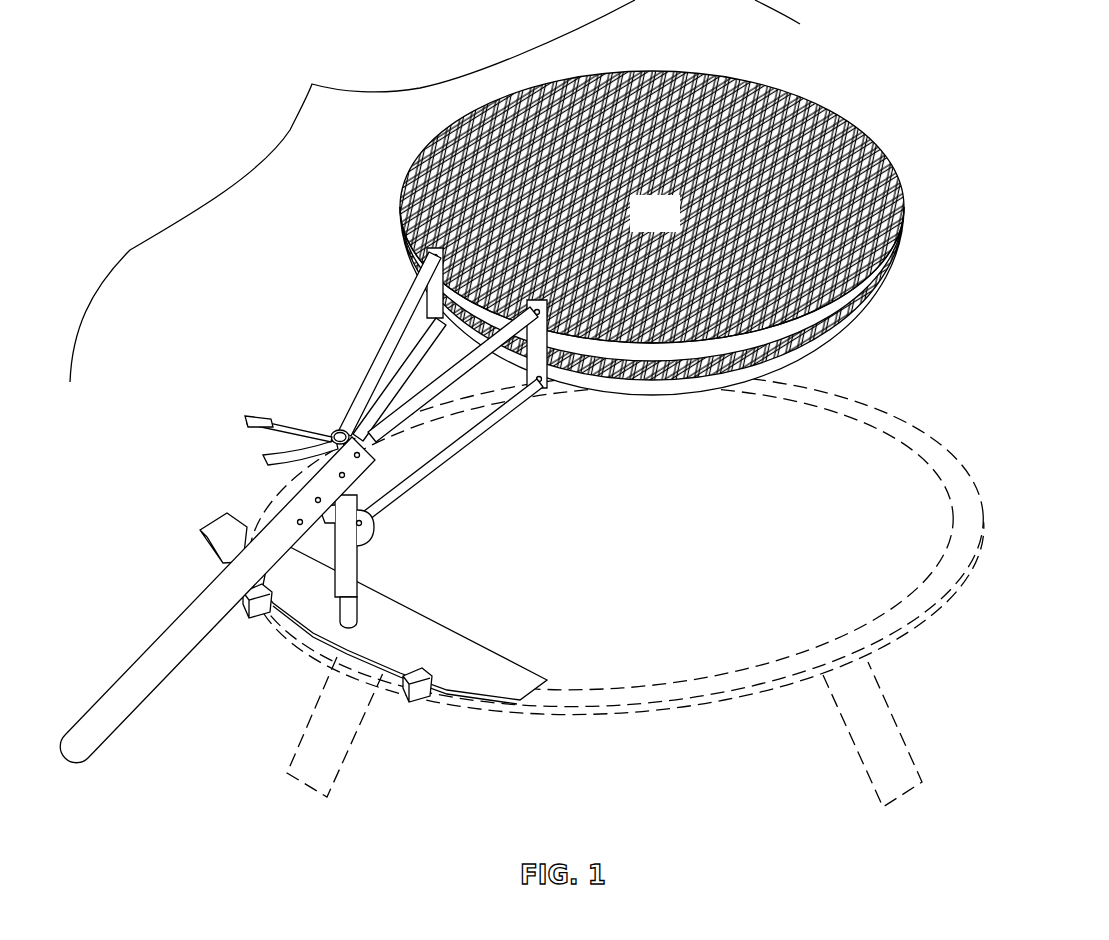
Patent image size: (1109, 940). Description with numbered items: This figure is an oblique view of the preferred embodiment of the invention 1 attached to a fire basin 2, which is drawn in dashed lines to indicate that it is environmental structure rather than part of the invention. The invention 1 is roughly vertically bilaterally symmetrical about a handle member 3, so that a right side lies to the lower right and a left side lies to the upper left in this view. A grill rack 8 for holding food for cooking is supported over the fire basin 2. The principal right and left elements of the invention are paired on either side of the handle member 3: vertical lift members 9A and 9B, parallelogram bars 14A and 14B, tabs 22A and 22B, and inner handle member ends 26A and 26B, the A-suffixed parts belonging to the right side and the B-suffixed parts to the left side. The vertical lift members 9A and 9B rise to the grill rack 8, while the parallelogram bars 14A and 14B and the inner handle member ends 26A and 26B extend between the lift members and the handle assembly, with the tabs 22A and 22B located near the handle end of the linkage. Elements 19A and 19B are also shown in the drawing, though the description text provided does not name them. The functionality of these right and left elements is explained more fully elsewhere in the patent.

The invention 1 is at (435, 191).
The fire basin 2 is at (731, 563).
The handle member 3 is at (140, 613).
The grill rack 8 is at (661, 223).
The vertical lift member 9A is at (538, 342).
The vertical lift member 9B is at (437, 296).
The parallelogram bar 14A is at (435, 463).
The parallelogram bar 14B is at (393, 397).
The first pivot post 19A is at (375, 490).
The second pivot 19B is at (300, 453).
The tab 22A is at (262, 414).
The tab 22B is at (247, 420).
The inner handle member end 26A is at (457, 378).
The inner handle member end 26B is at (385, 352).